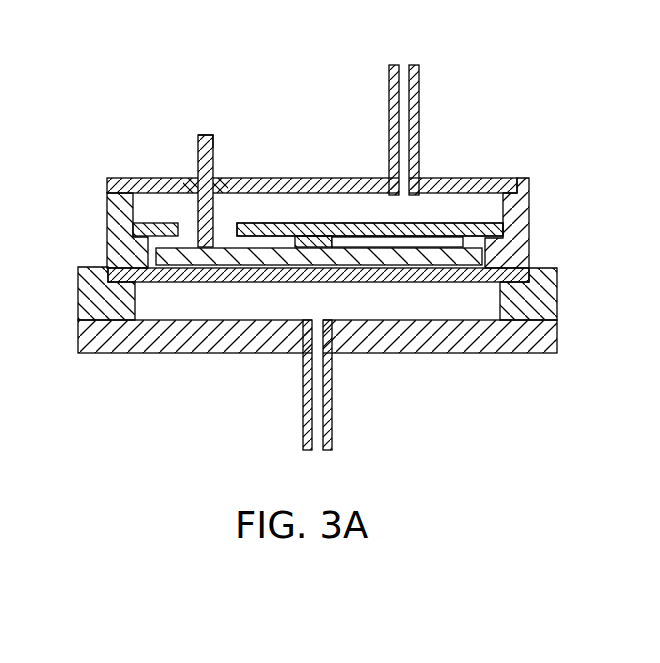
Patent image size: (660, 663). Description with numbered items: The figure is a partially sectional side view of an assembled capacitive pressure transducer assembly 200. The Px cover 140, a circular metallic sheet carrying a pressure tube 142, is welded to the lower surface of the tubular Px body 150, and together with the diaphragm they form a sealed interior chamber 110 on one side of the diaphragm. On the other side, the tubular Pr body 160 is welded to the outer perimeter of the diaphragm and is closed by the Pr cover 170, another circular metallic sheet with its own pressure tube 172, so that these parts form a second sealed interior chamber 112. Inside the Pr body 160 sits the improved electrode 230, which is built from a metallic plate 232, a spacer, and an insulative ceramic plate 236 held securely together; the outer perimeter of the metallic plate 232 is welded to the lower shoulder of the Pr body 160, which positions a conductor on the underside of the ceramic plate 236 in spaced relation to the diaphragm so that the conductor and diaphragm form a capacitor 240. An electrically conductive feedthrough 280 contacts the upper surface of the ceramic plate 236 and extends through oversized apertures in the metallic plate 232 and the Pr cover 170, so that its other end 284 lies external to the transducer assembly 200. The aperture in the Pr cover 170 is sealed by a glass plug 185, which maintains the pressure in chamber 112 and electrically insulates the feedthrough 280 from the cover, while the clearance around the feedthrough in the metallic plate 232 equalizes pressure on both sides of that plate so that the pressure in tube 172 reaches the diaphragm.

The sealed interior chamber 110 is at (200, 315).
The sealed interior chamber 112 is at (382, 219).
The Px cover 140 is at (419, 356).
The pressure tube 142 is at (333, 432).
The Px body 150 is at (558, 320).
The Pr body 160 is at (530, 243).
The Pr cover 170 is at (311, 176).
The pressure tube 172 is at (418, 122).
The glass plug 185 is at (221, 177).
The transducer assembly 200 is at (205, 409).
The electrode 230 is at (247, 221).
The metallic plate 232 is at (398, 222).
The ceramic plate 236 is at (464, 244).
The capacitor 240 is at (325, 287).
The feedthrough 280 is at (197, 170).
The other end of feedthrough 284 is at (203, 136).